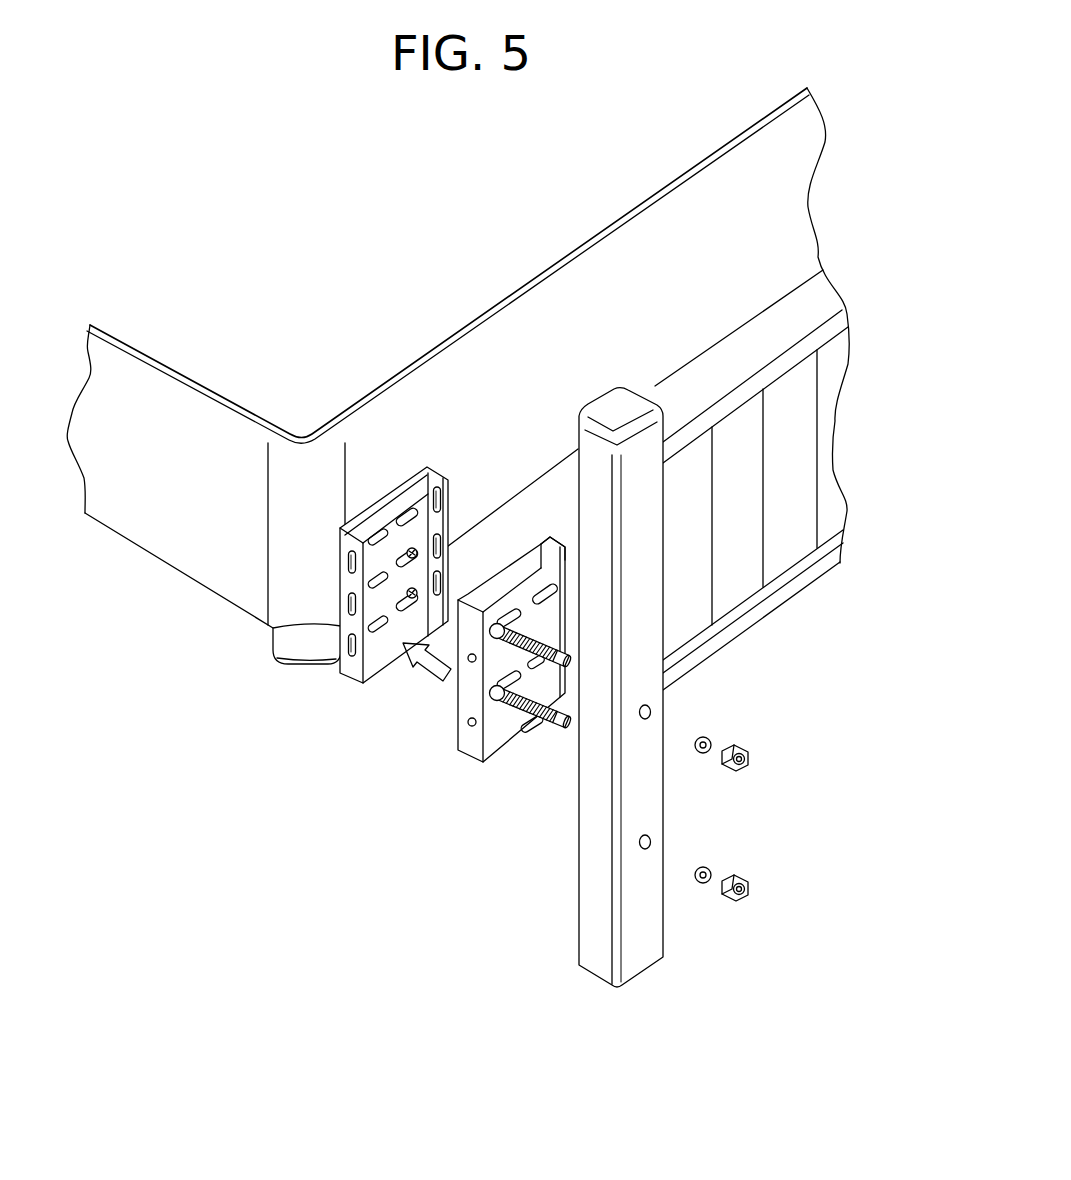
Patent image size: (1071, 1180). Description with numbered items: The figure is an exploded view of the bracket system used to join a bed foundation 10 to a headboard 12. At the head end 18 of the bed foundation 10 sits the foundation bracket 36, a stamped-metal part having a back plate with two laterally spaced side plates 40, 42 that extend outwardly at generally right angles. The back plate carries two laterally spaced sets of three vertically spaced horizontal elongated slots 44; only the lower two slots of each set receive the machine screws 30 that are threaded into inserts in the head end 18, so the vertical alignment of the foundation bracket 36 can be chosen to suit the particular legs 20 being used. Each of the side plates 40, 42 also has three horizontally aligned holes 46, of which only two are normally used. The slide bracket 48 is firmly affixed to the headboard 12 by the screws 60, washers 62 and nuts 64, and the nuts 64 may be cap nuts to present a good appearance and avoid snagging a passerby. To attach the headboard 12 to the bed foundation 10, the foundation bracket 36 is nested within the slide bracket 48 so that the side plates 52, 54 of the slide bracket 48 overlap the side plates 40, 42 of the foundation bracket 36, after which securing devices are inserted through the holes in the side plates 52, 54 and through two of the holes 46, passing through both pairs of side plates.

The bed foundation 10 is at (146, 588).
The headboard 12 is at (592, 907).
The head end 18 is at (506, 396).
The legs 20 is at (283, 645).
The machine screws 30 is at (443, 573).
The foundation bracket 36 is at (389, 591).
The side plate 40 is at (324, 606).
The side plate 42 is at (438, 468).
The horizontal elongated slots 44 is at (405, 512).
The holes 46 is at (347, 562).
The slide bracket 48 is at (496, 665).
The side plate 52 is at (465, 752).
The side plate 54 is at (557, 543).
The screws 60 is at (565, 662).
The washers 62 is at (703, 756).
The nuts 64 is at (737, 772).